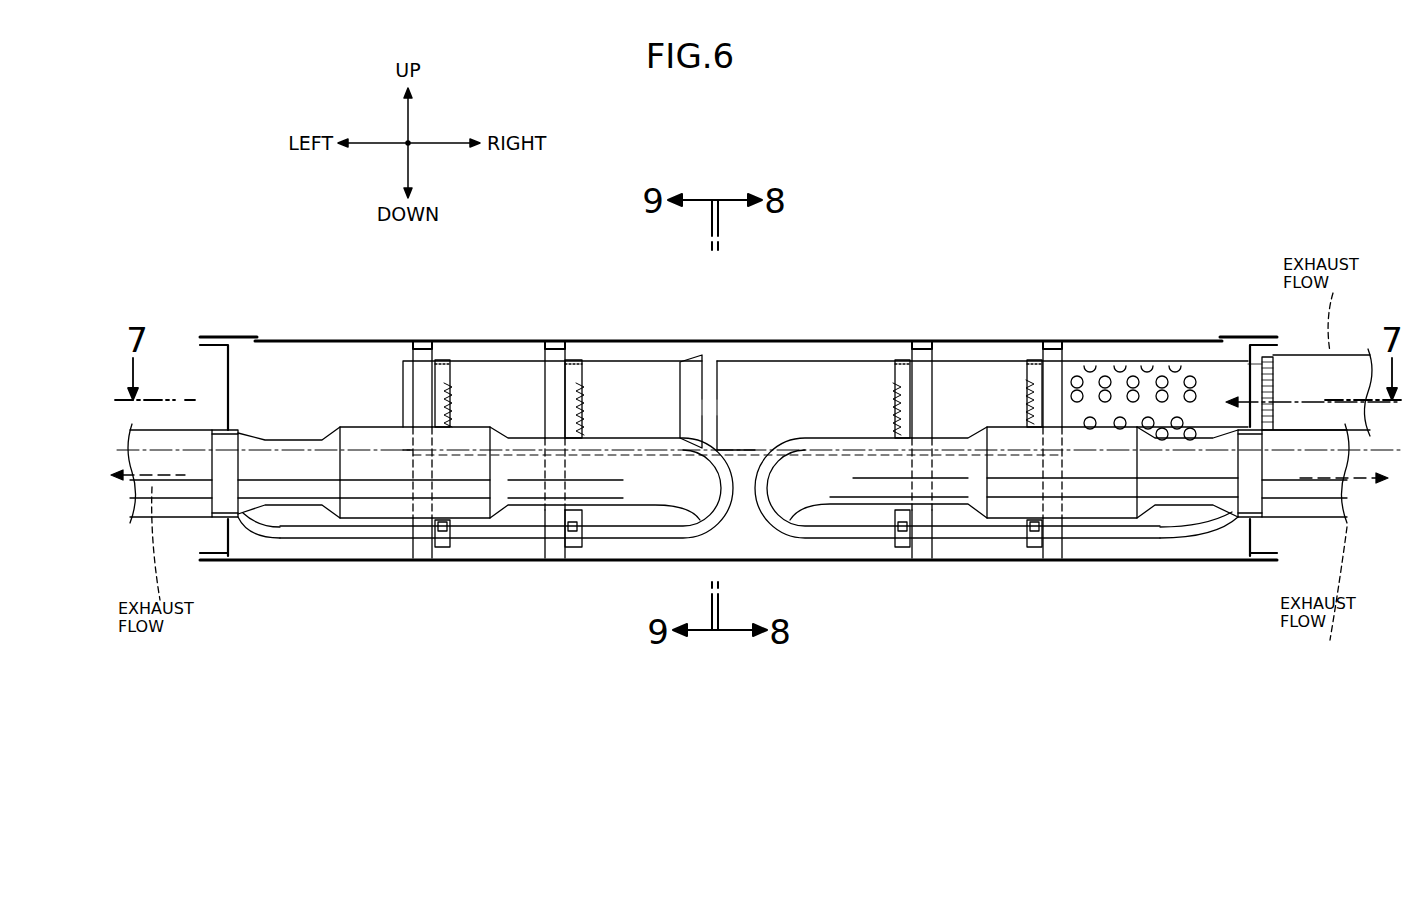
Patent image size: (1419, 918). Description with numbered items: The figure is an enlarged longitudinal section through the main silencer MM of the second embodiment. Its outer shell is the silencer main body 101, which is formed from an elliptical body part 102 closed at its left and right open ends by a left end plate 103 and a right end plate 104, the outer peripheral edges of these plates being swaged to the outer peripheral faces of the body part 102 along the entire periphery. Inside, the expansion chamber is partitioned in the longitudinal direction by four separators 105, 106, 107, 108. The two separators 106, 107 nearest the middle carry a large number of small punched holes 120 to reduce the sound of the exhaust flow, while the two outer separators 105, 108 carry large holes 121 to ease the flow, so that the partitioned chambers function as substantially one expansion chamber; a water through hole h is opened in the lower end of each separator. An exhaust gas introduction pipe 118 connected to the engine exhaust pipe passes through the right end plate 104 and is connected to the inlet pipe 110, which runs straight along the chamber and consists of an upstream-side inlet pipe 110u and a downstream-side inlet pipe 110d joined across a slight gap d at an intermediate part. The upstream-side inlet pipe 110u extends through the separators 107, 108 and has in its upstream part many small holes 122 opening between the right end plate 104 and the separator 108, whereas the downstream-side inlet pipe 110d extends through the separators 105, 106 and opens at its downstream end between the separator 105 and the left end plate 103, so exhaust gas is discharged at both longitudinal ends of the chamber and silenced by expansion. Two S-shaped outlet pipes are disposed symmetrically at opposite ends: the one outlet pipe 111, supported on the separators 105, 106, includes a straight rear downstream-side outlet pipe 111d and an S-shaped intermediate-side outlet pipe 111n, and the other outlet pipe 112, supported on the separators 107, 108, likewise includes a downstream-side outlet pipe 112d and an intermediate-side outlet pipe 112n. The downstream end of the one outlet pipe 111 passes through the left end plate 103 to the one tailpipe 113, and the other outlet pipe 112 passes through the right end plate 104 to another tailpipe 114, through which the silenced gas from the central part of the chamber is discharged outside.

The main silencer MM is at (810, 237).
The silencer main body 101 is at (811, 340).
The body part 102 is at (337, 338).
The left end plate 103 is at (215, 387).
The right end plate 104 is at (1245, 345).
The separator 105 is at (437, 345).
The separator 106 is at (568, 345).
The separator 107 is at (903, 345).
The separator 108 is at (1045, 345).
The inlet pipe 110 is at (714, 354).
The downstream-side inlet pipe 110d is at (643, 372).
The upstream-side inlet pipe 110u is at (747, 369).
The one outlet pipe 111 is at (292, 436).
The downstream-side outlet pipe 111d is at (305, 500).
The intermediate-side outlet pipe 111n is at (690, 512).
The other outlet pipe 112 is at (997, 518).
The downstream-side outlet pipe 112d is at (1183, 500).
The intermediate-side outlet pipe 112n is at (790, 507).
The one tailpipe 113 is at (183, 507).
The another tailpipe 114 is at (1302, 505).
The exhaust gas introduction pipe 118 is at (1302, 370).
The small holes 120 is at (565, 417).
The large holes 121 is at (433, 390).
The small holes 122 is at (1177, 417).
The water through hole h is at (1032, 548).
The gap d is at (708, 407).